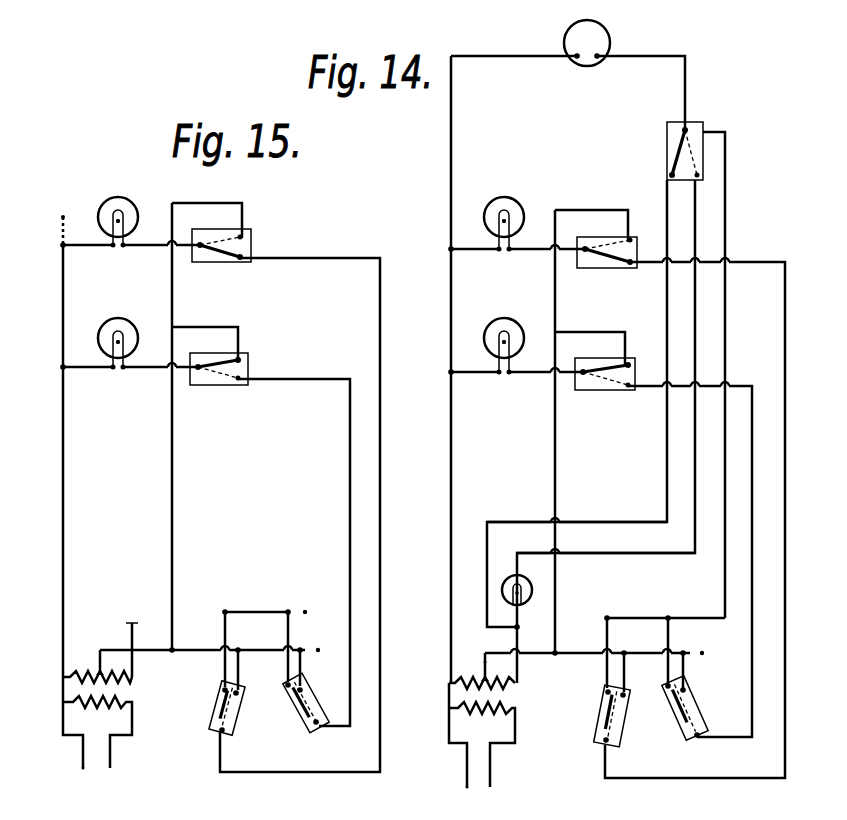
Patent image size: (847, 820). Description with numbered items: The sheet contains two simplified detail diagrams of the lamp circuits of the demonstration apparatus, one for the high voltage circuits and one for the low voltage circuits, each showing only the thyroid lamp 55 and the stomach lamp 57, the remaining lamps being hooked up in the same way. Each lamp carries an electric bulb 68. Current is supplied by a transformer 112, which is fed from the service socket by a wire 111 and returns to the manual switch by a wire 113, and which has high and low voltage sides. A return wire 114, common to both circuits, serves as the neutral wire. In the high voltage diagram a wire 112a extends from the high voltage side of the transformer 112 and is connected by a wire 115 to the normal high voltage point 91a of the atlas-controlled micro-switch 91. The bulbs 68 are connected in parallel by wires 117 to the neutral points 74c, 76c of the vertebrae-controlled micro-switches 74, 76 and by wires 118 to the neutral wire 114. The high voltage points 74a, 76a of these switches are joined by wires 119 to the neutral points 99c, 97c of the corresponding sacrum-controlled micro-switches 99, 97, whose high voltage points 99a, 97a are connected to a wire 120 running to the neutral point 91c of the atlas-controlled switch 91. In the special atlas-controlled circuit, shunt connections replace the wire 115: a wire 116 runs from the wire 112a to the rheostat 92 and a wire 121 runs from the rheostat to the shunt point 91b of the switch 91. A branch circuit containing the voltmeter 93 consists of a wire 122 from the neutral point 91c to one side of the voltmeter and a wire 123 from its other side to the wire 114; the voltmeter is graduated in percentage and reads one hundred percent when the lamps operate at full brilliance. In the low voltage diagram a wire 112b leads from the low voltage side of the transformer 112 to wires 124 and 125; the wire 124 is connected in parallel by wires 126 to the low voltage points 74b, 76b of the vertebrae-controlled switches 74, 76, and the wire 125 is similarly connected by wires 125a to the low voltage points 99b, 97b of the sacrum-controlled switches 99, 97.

In FIG. 15, the thyroid lamp 55 is at (108, 198).
In FIG. 14, the thyroid lamp 55 is at (496, 198).
In FIG. 15, the stomach lamp 57 is at (108, 320).
In FIG. 14, the stomach lamp 57 is at (493, 322).
In FIG. 15, the electric bulb 68 is at (124, 208).
In FIG. 14, the electric bulb 68 is at (510, 208).
In FIG. 15, the vertebrae-controlled micro-switch 74 is at (228, 264).
In FIG. 14, the vertebrae-controlled micro-switch 74 is at (608, 270).
In FIG. 15, the high voltage point of switch 74 74a is at (242, 259).
In FIG. 14, the high voltage point of switch 74 74a is at (632, 264).
In FIG. 15, the low voltage point of switch 74 74b is at (242, 238).
In FIG. 14, the low voltage point of switch 74 74b is at (645, 236).
In FIG. 15, the neutral point of switch 74 74c is at (200, 250).
In FIG. 14, the neutral point of switch 74 74c is at (585, 254).
In FIG. 15, the vertebrae-controlled micro-switch 76 is at (226, 387).
In FIG. 14, the vertebrae-controlled micro-switch 76 is at (608, 392).
In FIG. 15, the high voltage point of switch 76 76a is at (240, 380).
In FIG. 14, the high voltage point of switch 76 76a is at (630, 388).
In FIG. 15, the low voltage point of switch 76 76b is at (240, 361).
In FIG. 14, the low voltage point of switch 76 76b is at (645, 357).
In FIG. 15, the neutral point of switch 76 76c is at (198, 372).
In FIG. 14, the neutral point of switch 76 76c is at (583, 377).
In FIG. 14, the atlas-controlled micro-switch 91 is at (667, 136).
In FIG. 14, the normal high voltage point 91a is at (670, 174).
In FIG. 14, the shunt point 91b is at (703, 177).
In FIG. 14, the neutral point 91c is at (688, 128).
In FIG. 14, the rheostat 92 is at (502, 595).
In FIG. 14, the voltmeter 93 is at (587, 67).
In FIG. 15, the sacrum-controlled micro-switch 97 is at (298, 732).
In FIG. 14, the sacrum-controlled micro-switch 97 is at (680, 732).
In FIG. 15, the high voltage point of switch 97 97a is at (290, 688).
In FIG. 14, the high voltage point of switch 97 97a is at (668, 690).
In FIG. 15, the low voltage point of switch 97 97b is at (299, 694).
In FIG. 14, the low voltage point of switch 97 97b is at (681, 694).
In FIG. 15, the neutral point of switch 97 97c is at (317, 726).
In FIG. 14, the neutral point of switch 97 97c is at (699, 738).
In FIG. 15, the sacrum-controlled micro-switch 99 is at (214, 738).
In FIG. 14, the sacrum-controlled micro-switch 99 is at (600, 738).
In FIG. 15, the high voltage point of switch 99 99a is at (223, 692).
In FIG. 14, the high voltage point of switch 99 99a is at (606, 694).
In FIG. 15, the low voltage point of switch 99 99b is at (234, 696).
In FIG. 14, the low voltage point of switch 99 99b is at (620, 698).
In FIG. 15, the neutral point of switch 99 99c is at (224, 733).
In FIG. 14, the neutral point of switch 99 99c is at (608, 742).
In FIG. 15, the wire 111 is at (110, 755).
In FIG. 14, the wire 111 is at (490, 760).
In FIG. 15, the transformer 112 is at (62, 688).
In FIG. 14, the transformer 112 is at (446, 696).
In FIG. 15, the wire 112a is at (133, 664).
In FIG. 14, the wire 112a is at (517, 670).
In FIG. 15, the wire 112b is at (126, 623).
In FIG. 14, the wire 112b is at (485, 662).
In FIG. 15, the wire 113 is at (83, 770).
In FIG. 14, the wire 113 is at (466, 779).
In FIG. 15, the return wire 114 is at (63, 505).
In FIG. 14, the return wire 114 is at (451, 497).
In FIG. 14, the wire 115 is at (593, 522).
In FIG. 14, the wire 116 is at (520, 616).
In FIG. 15, the wires 117 is at (150, 256).
In FIG. 14, the wires 117 is at (534, 260).
In FIG. 15, the wires 118 is at (95, 258).
In FIG. 14, the wires 118 is at (480, 262).
In FIG. 15, the wires 119 is at (380, 350).
In FIG. 14, the wires 119 is at (785, 352).
In FIG. 14, the wire 120 is at (725, 204).
In FIG. 14, the wire 121 is at (617, 558).
In FIG. 14, the wire 122 is at (653, 58).
In FIG. 14, the wire 123 is at (510, 58).
In FIG. 15, the wire 124 is at (172, 505).
In FIG. 14, the wire 124 is at (557, 467).
In FIG. 15, the wire 125 is at (198, 650).
In FIG. 14, the wire 125 is at (580, 653).
In FIG. 15, the wires 125a is at (305, 650).
In FIG. 14, the wires 125a is at (685, 653).
In FIG. 15, the wires 126 is at (210, 203).
In FIG. 14, the wires 126 is at (590, 210).